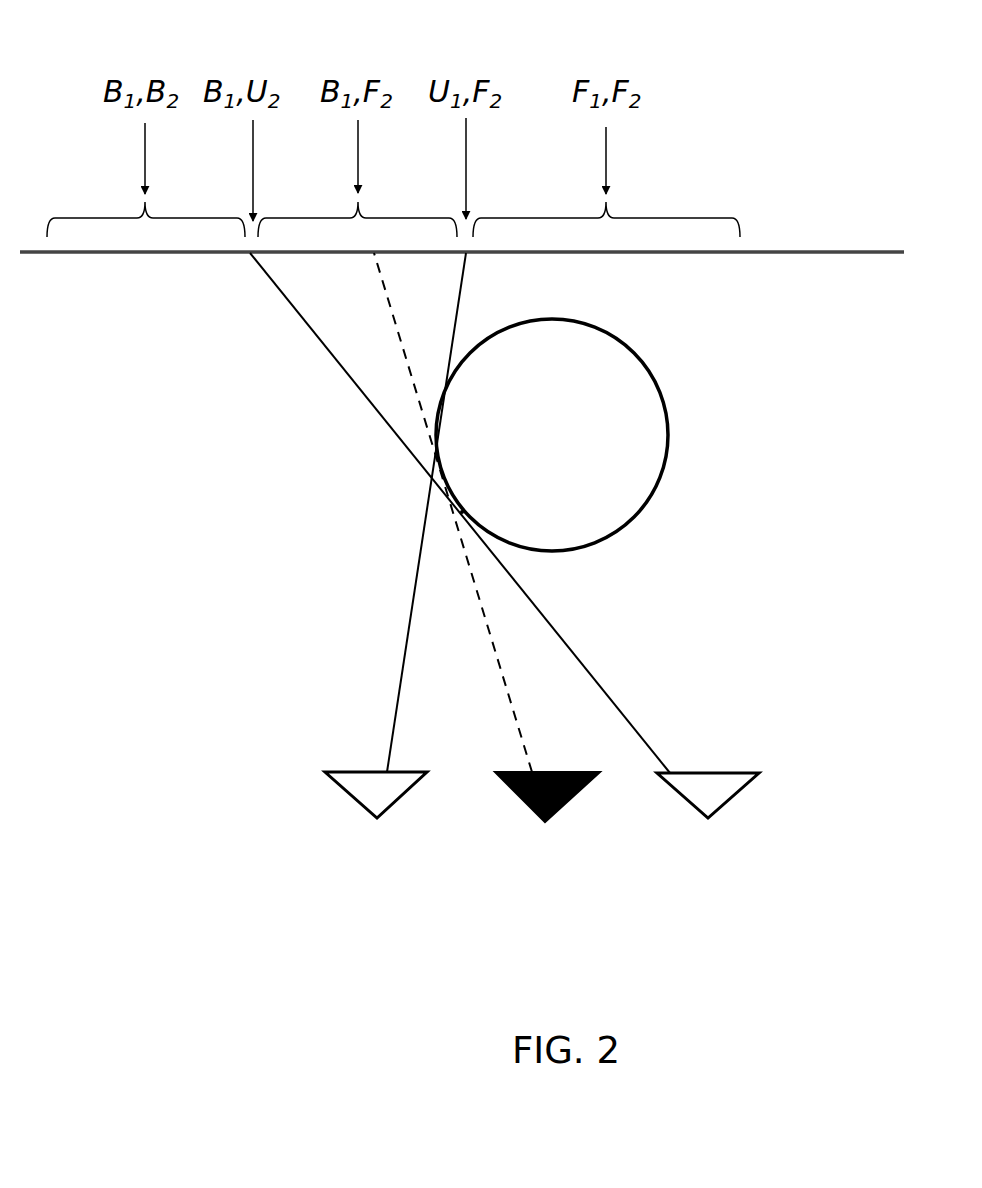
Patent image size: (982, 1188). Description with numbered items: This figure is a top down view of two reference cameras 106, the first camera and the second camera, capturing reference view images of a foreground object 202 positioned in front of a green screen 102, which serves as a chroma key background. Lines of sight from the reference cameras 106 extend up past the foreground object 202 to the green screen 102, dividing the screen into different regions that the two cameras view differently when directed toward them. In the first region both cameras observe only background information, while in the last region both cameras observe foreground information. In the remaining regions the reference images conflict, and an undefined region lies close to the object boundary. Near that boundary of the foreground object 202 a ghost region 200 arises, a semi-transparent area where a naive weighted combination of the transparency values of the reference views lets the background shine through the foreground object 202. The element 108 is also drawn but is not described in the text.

The green screen 102 is at (799, 242).
The reference cameras 106 is at (409, 811).
The projector 108 is at (583, 830).
The ghost region 200 is at (471, 505).
The foreground object 202 is at (642, 542).